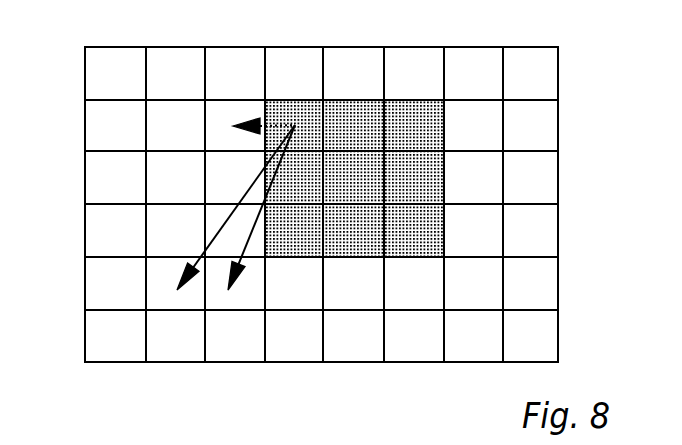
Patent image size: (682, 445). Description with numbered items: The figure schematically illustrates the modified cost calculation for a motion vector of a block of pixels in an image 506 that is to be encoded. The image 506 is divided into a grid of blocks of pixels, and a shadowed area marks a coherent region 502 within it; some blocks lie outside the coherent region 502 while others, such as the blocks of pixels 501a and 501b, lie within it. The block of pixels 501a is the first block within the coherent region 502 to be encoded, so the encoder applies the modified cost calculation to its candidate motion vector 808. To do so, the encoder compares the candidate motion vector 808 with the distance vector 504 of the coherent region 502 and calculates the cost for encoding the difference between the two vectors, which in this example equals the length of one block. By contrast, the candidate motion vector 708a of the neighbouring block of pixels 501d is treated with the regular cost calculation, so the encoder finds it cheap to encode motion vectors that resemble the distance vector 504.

The image 506 is at (85, 124).
The coherent region 502 is at (360, 200).
The block of pixels 501a is at (300, 110).
The block of pixels 501b is at (363, 110).
The block of pixels 501d is at (228, 116).
The candidate motion vector 708a is at (273, 125).
The distance vector 504 is at (208, 238).
The candidate motion vector 808 is at (255, 228).